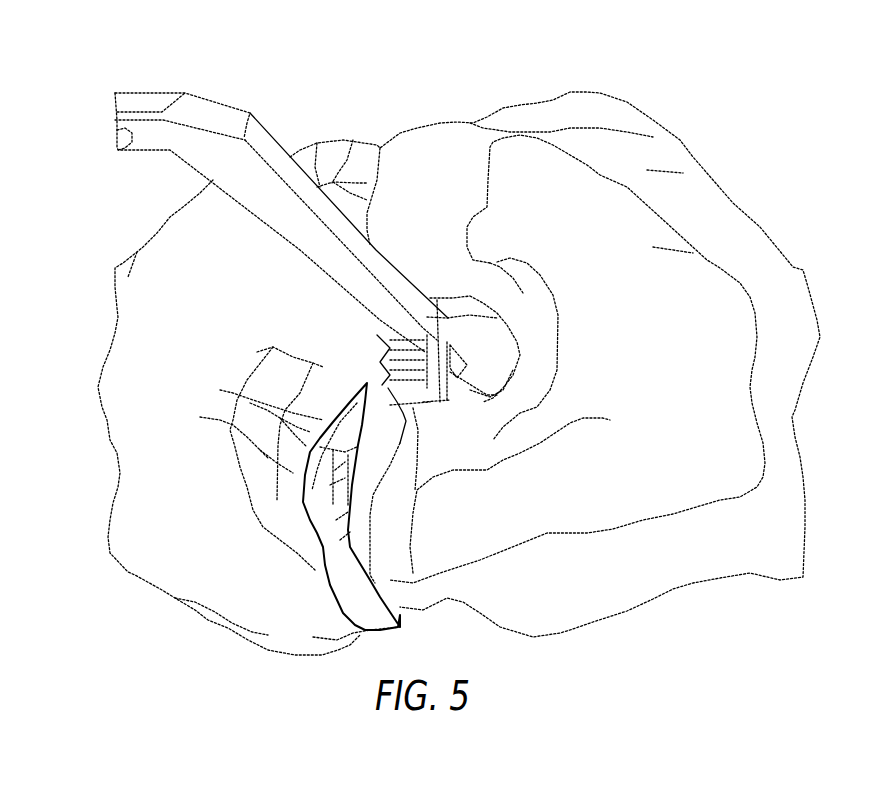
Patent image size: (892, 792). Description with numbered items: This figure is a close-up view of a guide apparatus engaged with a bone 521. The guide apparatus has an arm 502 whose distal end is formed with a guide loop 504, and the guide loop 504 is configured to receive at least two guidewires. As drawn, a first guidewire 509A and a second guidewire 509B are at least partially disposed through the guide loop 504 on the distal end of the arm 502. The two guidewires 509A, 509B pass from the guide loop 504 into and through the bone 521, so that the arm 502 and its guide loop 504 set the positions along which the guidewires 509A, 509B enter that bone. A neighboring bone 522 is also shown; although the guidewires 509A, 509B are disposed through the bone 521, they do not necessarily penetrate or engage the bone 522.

The arm 502 is at (210, 110).
The guide loop 504 is at (450, 350).
The first guidewire 509A is at (383, 362).
The second guidewire 509B is at (470, 402).
The bone 521 is at (118, 418).
The bone 522 is at (667, 160).